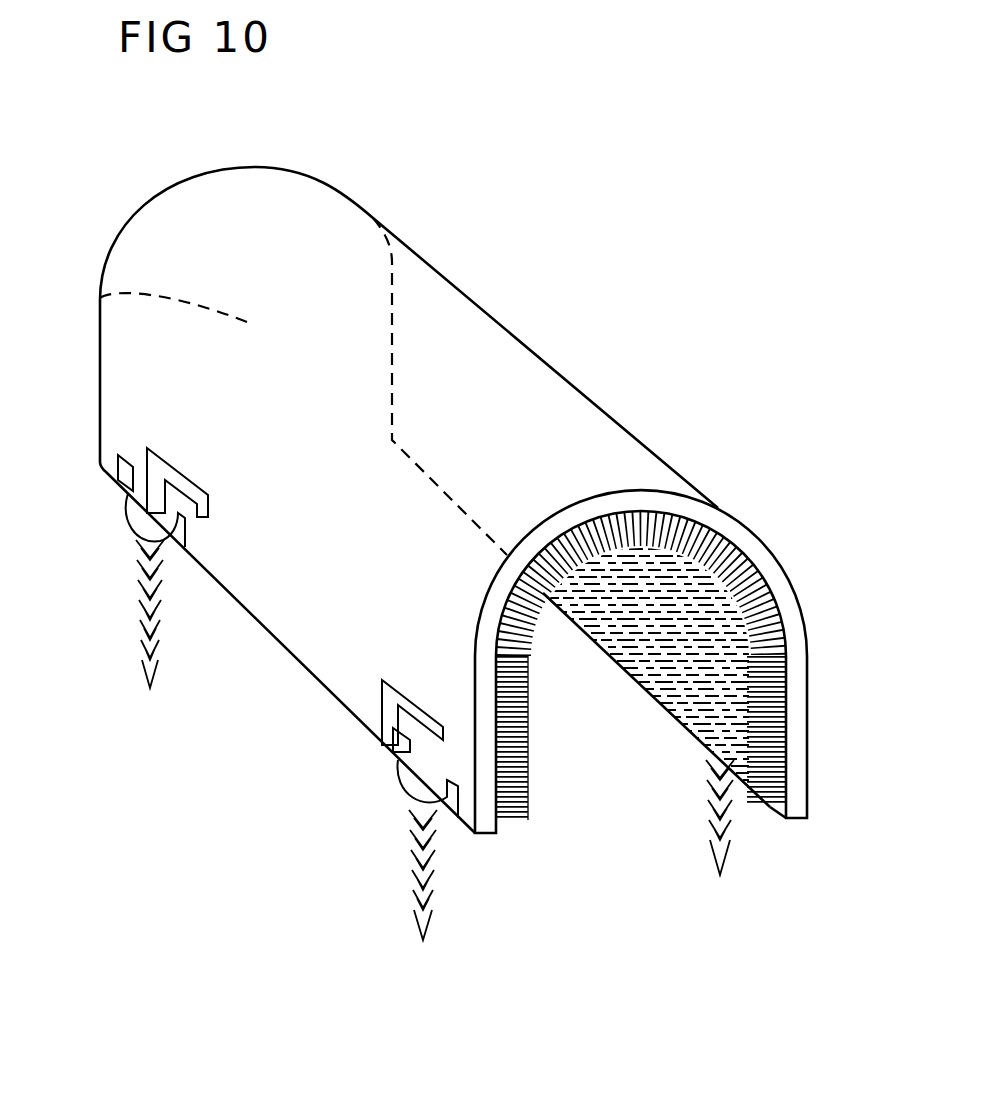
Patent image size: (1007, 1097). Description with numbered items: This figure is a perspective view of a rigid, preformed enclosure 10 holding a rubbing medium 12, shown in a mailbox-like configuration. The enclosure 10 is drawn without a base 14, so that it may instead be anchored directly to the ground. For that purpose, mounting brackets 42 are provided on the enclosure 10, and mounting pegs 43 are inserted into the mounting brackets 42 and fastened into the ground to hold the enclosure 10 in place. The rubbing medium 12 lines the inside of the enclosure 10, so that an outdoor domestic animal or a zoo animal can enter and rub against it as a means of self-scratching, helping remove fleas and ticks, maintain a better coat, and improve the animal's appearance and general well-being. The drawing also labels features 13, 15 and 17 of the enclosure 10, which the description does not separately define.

The enclosure 10 is at (603, 253).
The rubbing medium 12 is at (693, 727).
The side wall leg 13 is at (807, 745).
The base 14 is at (597, 775).
The arched front rim 15 is at (627, 490).
The insulating liner 17 is at (100, 298).
The mounting brackets 42 is at (413, 787).
The mounting pegs 43 is at (413, 918).